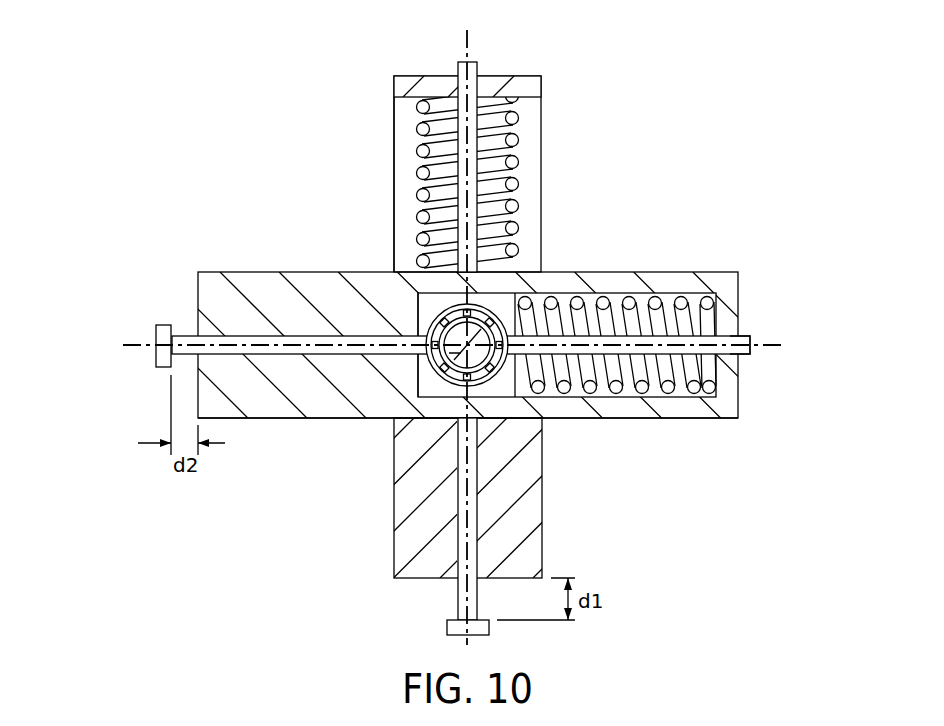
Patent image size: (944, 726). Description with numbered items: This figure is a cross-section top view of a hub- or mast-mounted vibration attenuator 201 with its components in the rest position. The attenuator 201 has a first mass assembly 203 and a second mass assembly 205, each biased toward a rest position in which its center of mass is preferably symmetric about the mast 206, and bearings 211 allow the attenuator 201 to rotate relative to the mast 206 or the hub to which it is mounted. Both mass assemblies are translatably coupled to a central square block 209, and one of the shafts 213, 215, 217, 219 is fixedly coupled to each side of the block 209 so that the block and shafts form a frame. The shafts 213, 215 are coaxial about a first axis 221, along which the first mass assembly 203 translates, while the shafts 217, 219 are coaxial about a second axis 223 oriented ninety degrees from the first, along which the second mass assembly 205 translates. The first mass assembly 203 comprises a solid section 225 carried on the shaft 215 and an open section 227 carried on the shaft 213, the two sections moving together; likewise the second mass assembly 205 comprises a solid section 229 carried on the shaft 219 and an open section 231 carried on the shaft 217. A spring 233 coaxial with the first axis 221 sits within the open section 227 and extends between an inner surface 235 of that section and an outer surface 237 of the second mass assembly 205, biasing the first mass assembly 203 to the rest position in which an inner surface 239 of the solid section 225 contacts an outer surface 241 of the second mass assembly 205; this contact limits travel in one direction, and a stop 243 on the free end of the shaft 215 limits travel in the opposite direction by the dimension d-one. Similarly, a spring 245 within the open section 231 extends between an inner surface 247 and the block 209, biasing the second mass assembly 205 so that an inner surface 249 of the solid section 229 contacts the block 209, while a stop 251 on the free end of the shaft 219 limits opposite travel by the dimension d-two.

The vibration attenuator 201 is at (255, 106).
The first mass assembly 203 is at (552, 145).
The second mass assembly 205 is at (249, 266).
The mast 206 is at (428, 368).
The block 209 is at (508, 300).
The bearings 211 is at (520, 398).
The shaft 213 is at (480, 68).
The shaft 215 is at (457, 596).
The shaft 217 is at (750, 337).
The shaft 219 is at (183, 336).
The first axis 221 is at (465, 44).
The second axis 223 is at (147, 345).
The solid section 225 is at (394, 503).
The open section 227 is at (400, 168).
The solid section 229 is at (285, 418).
The open section 231 is at (632, 418).
The spring 233 is at (413, 120).
The inner surface 235 is at (542, 105).
The outer surface 237 is at (617, 272).
The inner surface 239 is at (408, 400).
The outer surface 241 is at (310, 272).
The stop 243 is at (447, 628).
The spring 245 is at (694, 390).
The inner surface 247 is at (693, 303).
The inner surface 249 is at (428, 297).
The stop 251 is at (156, 332).